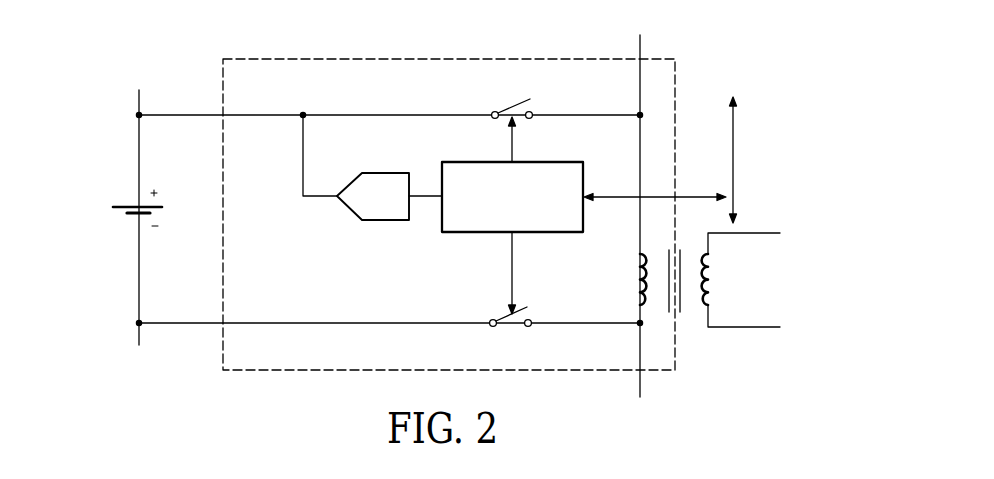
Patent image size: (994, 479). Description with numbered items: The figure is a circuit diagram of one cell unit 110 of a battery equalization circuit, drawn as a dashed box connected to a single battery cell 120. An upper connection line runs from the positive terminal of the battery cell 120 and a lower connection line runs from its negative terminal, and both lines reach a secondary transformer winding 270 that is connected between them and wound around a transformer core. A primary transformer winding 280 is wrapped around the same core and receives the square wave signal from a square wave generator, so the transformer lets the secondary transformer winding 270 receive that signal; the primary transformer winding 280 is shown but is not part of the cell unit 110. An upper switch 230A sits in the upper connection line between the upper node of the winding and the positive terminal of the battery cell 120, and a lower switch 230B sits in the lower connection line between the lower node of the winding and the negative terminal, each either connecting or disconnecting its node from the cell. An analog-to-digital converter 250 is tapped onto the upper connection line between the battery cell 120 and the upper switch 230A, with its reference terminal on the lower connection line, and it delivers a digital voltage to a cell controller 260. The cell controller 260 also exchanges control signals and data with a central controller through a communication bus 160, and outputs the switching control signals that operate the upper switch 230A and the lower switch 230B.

The cell unit 110 is at (222, 72).
The battery cell 120 is at (123, 202).
The communication bus 160 is at (736, 142).
The upper switch 230A is at (512, 105).
The lower switch 230B is at (507, 331).
The analog-to-digital converter (ADC) 250 is at (390, 222).
The cell controller 260 is at (553, 234).
The secondary transformer winding 270 is at (636, 277).
The primary transformer winding 280 is at (711, 279).